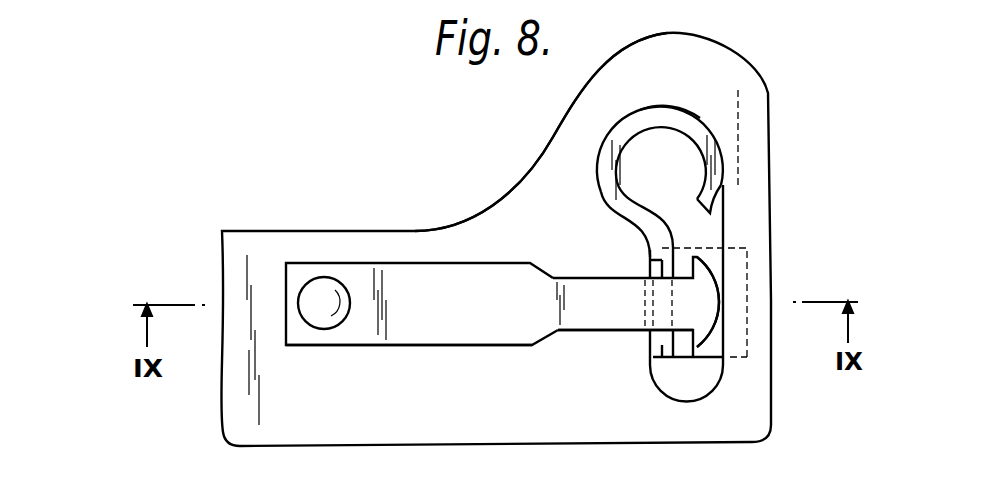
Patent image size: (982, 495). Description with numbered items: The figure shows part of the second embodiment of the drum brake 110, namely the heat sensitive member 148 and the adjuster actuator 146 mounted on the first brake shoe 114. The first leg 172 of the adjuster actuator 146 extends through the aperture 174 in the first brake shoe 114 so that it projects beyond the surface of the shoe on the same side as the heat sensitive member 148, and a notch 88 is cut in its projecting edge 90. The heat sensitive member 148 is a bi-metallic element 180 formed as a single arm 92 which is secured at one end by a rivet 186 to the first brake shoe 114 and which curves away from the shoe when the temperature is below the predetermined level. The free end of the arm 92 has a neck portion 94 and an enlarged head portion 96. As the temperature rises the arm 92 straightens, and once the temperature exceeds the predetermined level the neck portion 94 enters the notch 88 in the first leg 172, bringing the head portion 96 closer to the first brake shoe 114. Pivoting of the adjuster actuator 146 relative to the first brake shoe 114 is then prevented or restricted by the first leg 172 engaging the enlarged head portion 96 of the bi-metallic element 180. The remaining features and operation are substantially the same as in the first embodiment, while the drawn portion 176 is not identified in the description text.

The drum brake 110 is at (318, 457).
The bi-metallic element 180 is at (402, 258).
The arm 92 is at (418, 328).
The rivet 186 is at (318, 290).
The heat sensitive member 148 is at (473, 252).
The first brake shoe 114 is at (532, 178).
The neck portion 94 is at (603, 307).
The notch 88 is at (647, 335).
The enlarged head portion 96 is at (713, 332).
The projecting edge 90 is at (560, 145).
The hook ring portion 176 is at (693, 119).
The aperture 174 is at (718, 214).
The first leg 172 is at (662, 360).
The adjuster actuator 146 is at (705, 362).